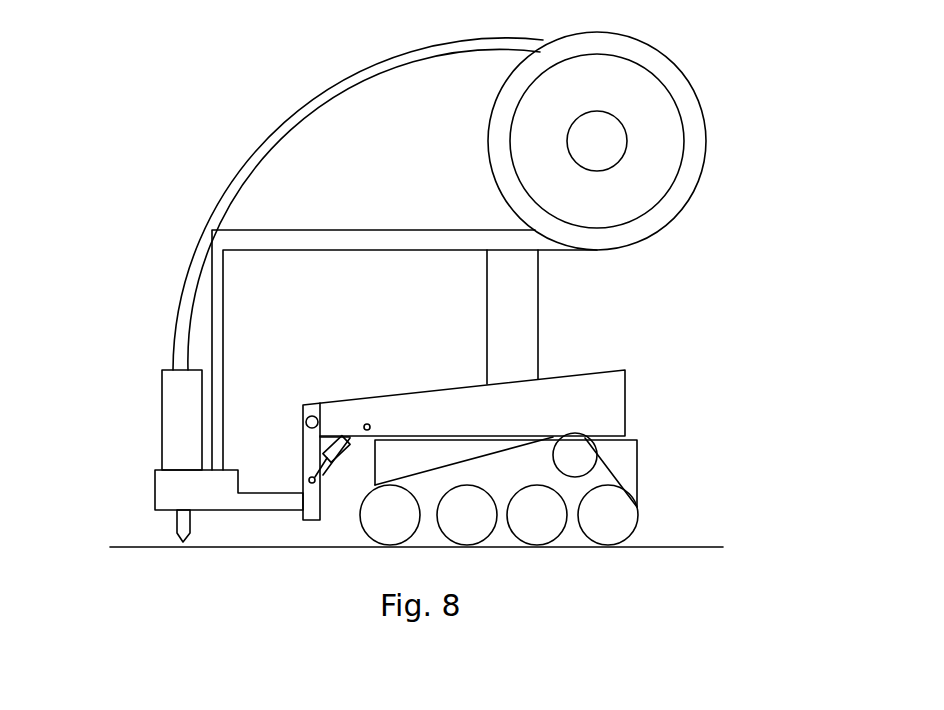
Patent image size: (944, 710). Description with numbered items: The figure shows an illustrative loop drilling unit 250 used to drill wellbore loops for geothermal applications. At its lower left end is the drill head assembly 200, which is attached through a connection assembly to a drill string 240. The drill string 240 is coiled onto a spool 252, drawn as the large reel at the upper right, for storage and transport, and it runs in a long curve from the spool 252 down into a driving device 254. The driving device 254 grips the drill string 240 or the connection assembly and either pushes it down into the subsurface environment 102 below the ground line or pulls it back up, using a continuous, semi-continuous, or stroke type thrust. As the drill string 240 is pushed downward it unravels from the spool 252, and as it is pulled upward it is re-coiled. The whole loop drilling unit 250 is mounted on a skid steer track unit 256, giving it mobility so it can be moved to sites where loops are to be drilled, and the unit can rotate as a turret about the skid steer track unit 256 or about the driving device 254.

The subsurface environment 102 is at (160, 607).
The drill head assembly 200 is at (177, 530).
The drill string 240 is at (247, 160).
The loop drilling unit 250 is at (245, 97).
The spool 252 is at (652, 215).
The driving device 254 is at (178, 408).
The skid steer track unit 256 is at (595, 477).